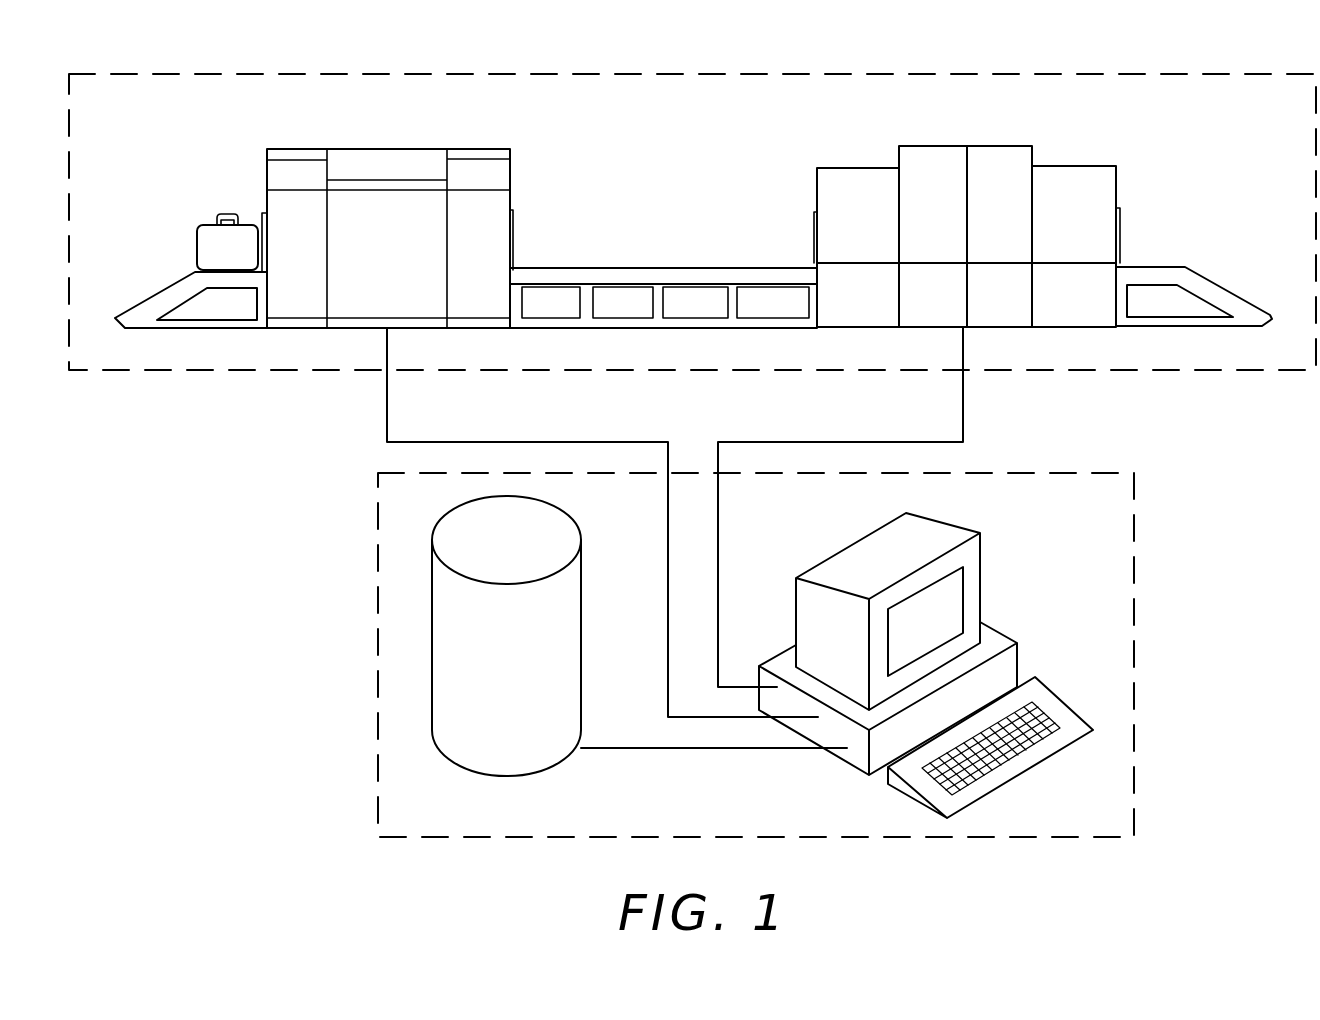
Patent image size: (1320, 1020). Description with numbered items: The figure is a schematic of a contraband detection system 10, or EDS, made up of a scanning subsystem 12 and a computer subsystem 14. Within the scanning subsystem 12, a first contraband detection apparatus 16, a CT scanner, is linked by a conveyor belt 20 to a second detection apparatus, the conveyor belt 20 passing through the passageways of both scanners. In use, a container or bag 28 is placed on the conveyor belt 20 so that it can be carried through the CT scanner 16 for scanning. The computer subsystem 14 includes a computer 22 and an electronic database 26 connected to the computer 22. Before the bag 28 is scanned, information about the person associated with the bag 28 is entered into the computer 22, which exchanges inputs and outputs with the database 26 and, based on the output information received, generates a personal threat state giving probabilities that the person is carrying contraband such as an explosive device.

The contraband detection system 10 is at (178, 525).
The scanning subsystem 12 is at (412, 73).
The computer subsystem 14 is at (1065, 473).
The first contraband detection apparatus 16 is at (289, 149).
The conveyor belt 20 is at (163, 298).
The computer 22 is at (997, 640).
The electronic database 26 is at (572, 590).
The bag 28 is at (208, 228).